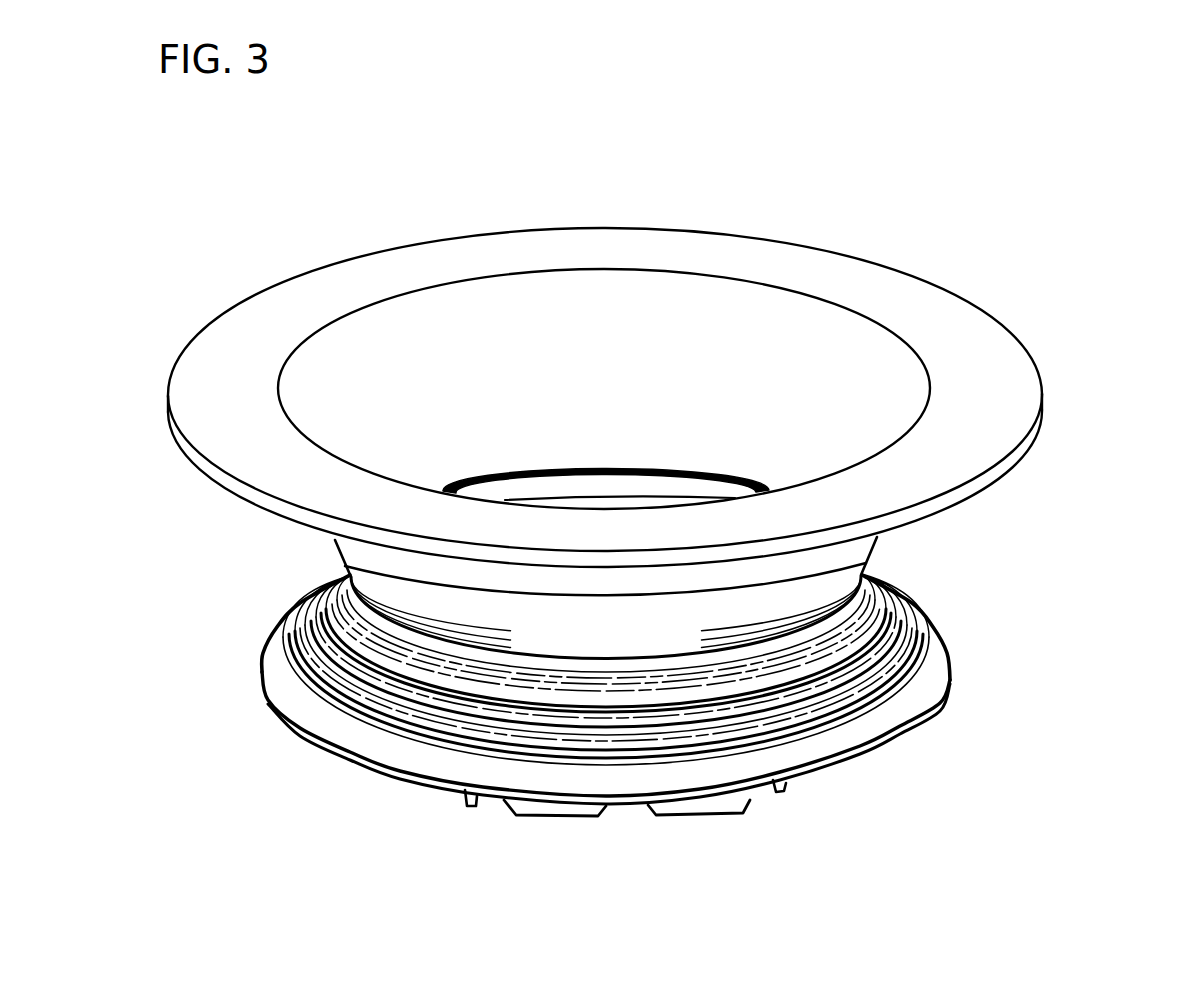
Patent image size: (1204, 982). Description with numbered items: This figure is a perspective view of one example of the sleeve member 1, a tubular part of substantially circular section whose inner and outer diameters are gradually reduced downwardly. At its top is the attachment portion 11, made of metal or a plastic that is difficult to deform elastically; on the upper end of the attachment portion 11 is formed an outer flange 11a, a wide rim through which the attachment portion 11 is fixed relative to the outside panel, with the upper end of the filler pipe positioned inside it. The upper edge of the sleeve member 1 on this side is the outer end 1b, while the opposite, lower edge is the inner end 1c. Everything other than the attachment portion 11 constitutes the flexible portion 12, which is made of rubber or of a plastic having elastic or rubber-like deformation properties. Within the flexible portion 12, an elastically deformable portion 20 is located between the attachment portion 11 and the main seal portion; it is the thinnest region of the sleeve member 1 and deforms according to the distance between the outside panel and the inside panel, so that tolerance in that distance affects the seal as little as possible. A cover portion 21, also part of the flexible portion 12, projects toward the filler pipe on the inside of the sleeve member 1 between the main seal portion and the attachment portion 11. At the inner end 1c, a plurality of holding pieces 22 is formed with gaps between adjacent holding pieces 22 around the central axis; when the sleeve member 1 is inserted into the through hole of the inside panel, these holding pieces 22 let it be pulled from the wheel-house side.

The sleeve member 1 is at (932, 272).
The outer end 1b is at (707, 277).
The inner end 1c is at (703, 814).
The attachment portion 11 is at (679, 397).
The outer flange 11a is at (1000, 358).
The flexible portion 12 is at (868, 580).
The elastically deformable portion 20 is at (877, 628).
The cover portion 21 is at (610, 481).
The holding pieces 22 is at (567, 815).